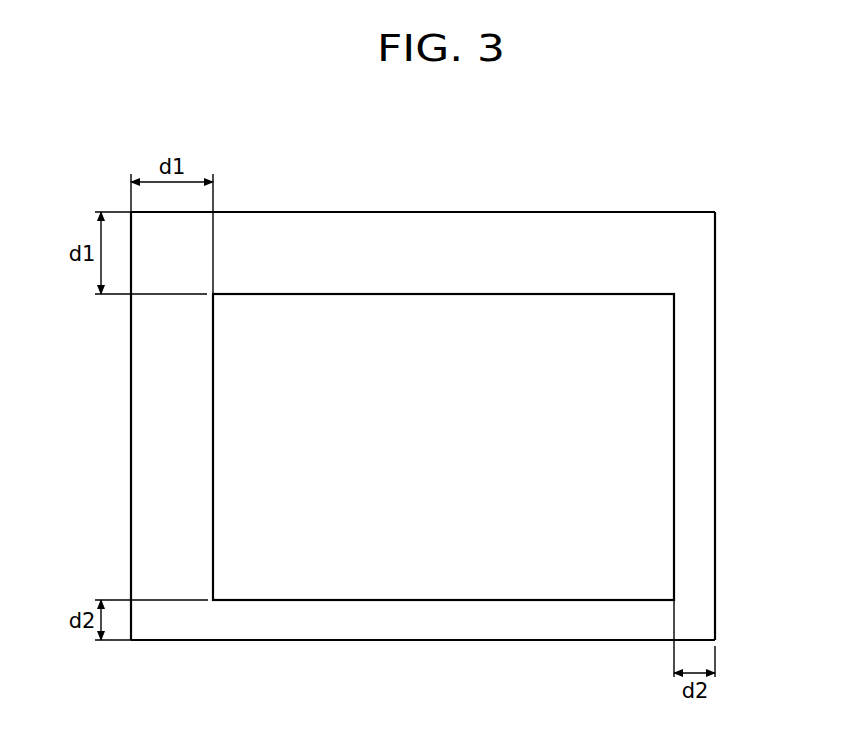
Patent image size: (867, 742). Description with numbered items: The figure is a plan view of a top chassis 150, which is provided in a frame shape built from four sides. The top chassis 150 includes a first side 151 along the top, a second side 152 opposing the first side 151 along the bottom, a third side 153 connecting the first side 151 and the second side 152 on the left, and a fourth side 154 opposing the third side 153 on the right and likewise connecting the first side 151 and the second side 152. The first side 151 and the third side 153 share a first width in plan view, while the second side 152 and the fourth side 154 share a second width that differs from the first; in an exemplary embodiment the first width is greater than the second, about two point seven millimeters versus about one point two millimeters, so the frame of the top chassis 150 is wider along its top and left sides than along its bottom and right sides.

The top chassis 150 is at (431, 171).
The first side 151 is at (643, 228).
The second side 152 is at (404, 627).
The third side 153 is at (142, 431).
The fourth side 154 is at (700, 442).